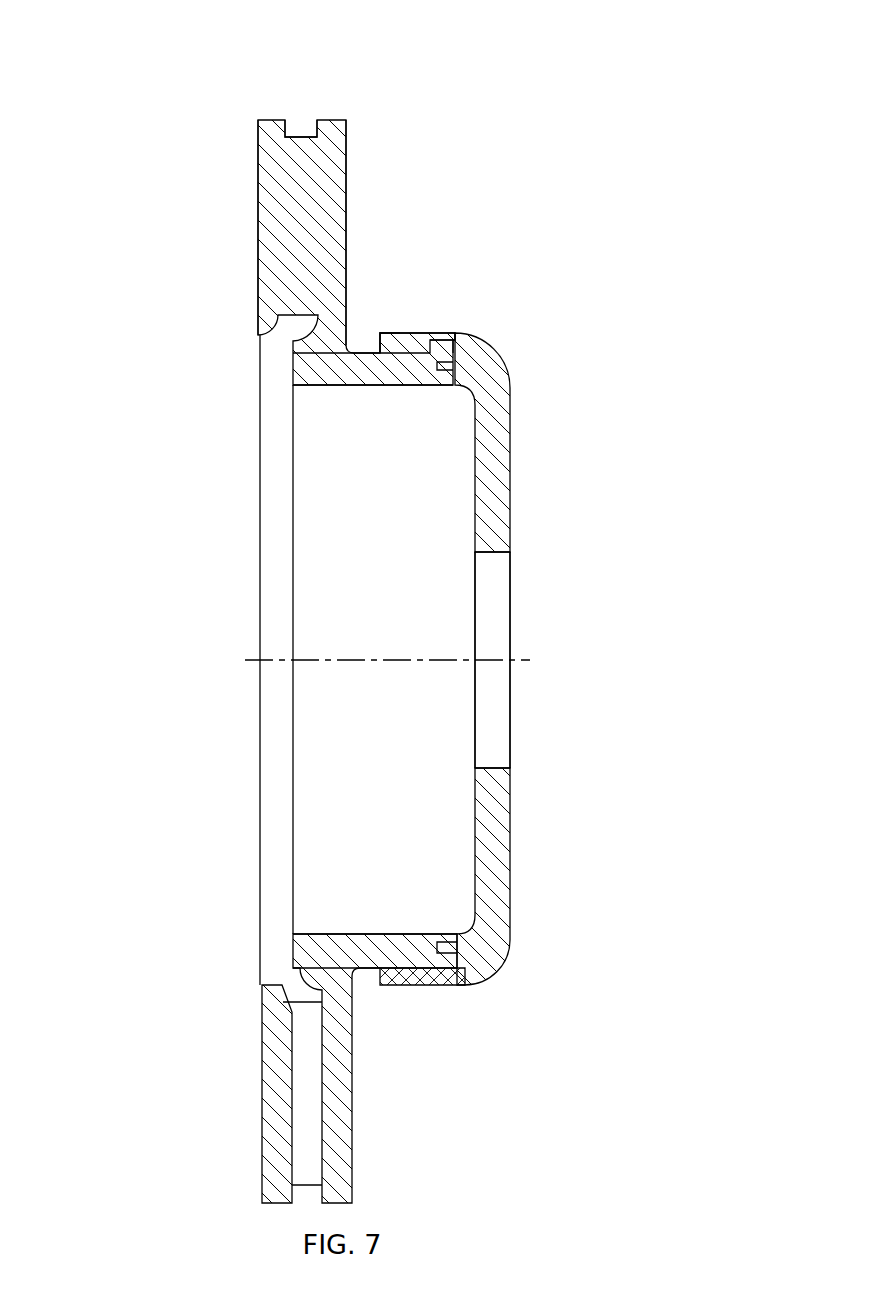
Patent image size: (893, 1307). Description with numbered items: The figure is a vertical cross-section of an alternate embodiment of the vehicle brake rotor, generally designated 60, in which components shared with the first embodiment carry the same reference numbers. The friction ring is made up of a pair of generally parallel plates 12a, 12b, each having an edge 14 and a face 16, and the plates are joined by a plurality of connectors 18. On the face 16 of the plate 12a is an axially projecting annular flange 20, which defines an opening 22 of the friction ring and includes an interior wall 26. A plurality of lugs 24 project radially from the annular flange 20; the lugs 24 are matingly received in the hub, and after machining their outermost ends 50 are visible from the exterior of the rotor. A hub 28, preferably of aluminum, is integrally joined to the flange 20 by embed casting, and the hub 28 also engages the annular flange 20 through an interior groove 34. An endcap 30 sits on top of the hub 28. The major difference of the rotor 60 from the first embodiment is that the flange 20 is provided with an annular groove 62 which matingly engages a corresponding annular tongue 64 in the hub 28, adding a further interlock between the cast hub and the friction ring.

The plate 12a is at (352, 1130).
The plate 12b is at (262, 1121).
The edge 14 is at (272, 119).
The face 16 is at (347, 192).
The connector 18 is at (302, 142).
The axially projecting annular flange 20 is at (378, 386).
The opening 22 is at (335, 660).
The lug 24 is at (401, 350).
The interior wall 26 is at (300, 386).
The hub 28 is at (512, 877).
The endcap 30 is at (500, 565).
The interior groove 34 is at (465, 340).
The outermost end 50 is at (447, 342).
The vehicle brake rotor 60 is at (224, 202).
The annular groove 62 is at (455, 955).
The annular tongue 64 is at (440, 370).